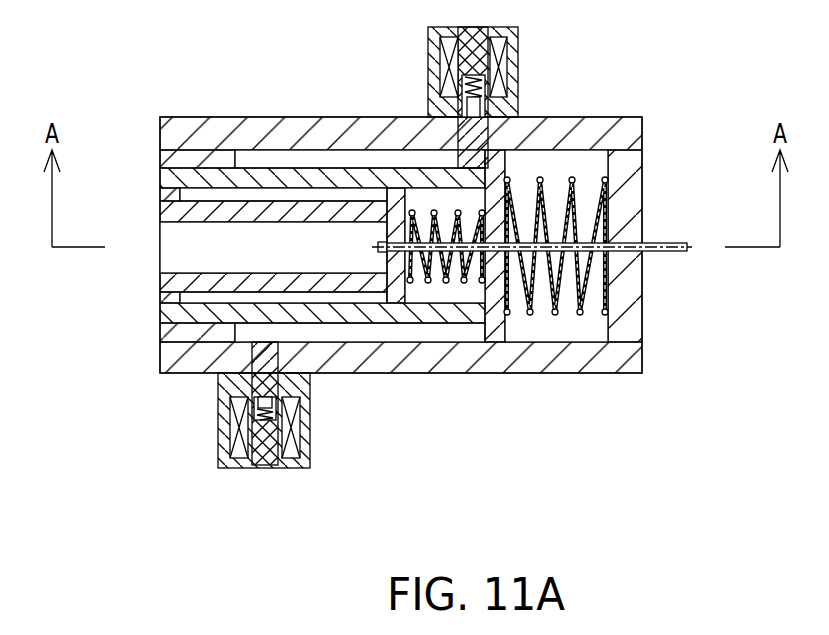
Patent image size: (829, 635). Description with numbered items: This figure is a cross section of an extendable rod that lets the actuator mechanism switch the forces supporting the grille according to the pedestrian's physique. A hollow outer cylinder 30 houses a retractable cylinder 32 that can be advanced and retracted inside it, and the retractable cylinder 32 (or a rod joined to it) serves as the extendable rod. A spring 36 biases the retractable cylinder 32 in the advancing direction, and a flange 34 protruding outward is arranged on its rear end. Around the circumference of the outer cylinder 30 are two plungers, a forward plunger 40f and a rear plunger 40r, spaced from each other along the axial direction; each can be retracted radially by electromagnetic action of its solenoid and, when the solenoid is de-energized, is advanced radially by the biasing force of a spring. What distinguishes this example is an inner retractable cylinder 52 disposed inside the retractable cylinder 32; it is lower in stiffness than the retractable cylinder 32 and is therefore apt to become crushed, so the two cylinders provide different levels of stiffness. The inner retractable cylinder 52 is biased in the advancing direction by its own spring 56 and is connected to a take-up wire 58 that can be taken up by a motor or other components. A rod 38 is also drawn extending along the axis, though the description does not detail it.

The outer cylinder 30 is at (503, 373).
The retractable cylinder 32 is at (380, 325).
The flange 34 is at (482, 333).
The spring 36 is at (588, 290).
The rod 38 is at (663, 242).
The forward plunger 40f is at (260, 365).
The rear plunger 40r is at (487, 133).
The inner retractable cylinder 52 is at (222, 203).
The spring 56 is at (392, 262).
The take-up wire 58 is at (423, 235).